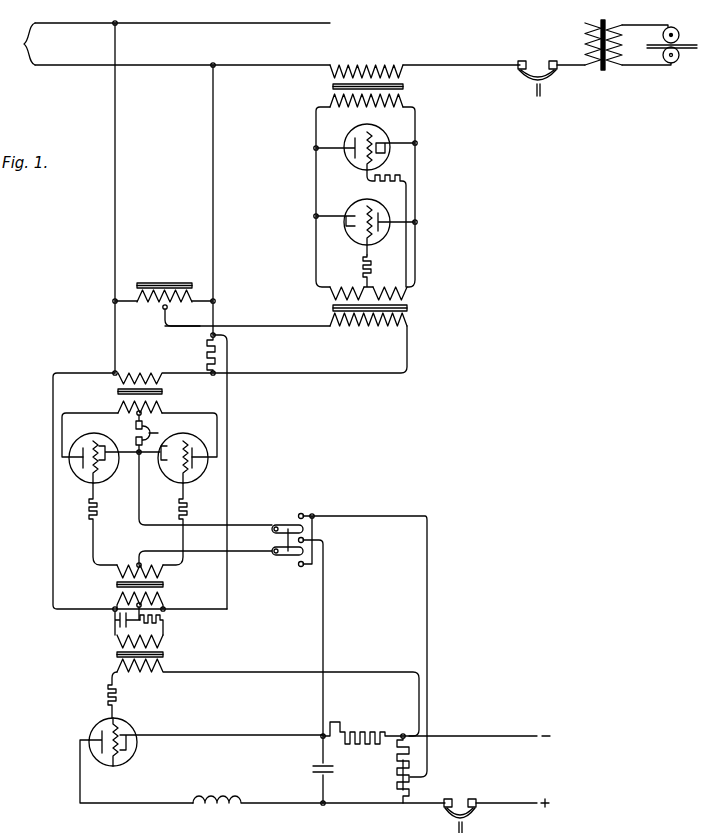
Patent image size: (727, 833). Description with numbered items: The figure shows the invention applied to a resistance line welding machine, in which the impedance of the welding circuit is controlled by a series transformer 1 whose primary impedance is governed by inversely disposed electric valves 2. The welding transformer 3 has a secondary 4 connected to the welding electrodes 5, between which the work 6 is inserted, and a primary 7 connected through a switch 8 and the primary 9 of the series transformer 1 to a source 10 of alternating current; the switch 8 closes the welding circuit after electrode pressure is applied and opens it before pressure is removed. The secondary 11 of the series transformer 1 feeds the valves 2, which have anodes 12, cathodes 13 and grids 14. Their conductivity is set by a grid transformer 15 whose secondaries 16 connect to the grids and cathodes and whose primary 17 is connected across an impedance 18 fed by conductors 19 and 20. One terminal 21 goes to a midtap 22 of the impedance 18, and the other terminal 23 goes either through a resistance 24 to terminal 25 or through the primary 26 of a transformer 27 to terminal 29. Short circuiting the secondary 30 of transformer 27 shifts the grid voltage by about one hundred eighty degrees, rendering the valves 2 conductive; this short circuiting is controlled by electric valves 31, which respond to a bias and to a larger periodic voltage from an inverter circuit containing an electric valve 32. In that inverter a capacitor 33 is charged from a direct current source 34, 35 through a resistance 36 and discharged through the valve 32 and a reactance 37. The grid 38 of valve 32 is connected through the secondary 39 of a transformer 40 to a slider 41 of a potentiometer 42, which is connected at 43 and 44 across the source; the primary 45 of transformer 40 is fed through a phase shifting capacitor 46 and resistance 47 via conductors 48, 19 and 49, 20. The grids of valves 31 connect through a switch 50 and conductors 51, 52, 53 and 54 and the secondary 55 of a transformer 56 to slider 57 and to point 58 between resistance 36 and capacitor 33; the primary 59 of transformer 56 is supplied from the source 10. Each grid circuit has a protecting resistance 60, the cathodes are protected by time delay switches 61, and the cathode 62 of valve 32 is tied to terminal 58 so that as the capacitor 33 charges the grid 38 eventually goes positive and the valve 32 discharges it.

The series transformer 1 is at (408, 88).
The electric valves 2 is at (352, 136).
The welding transformer 3 is at (603, 72).
The secondary 4 is at (612, 64).
The welding electrodes 5 is at (663, 35).
The work 6 is at (692, 44).
The primary 7 is at (584, 44).
The switch 8 is at (526, 80).
The primary 9 is at (388, 62).
The source of periodic current 10 is at (264, 44).
The secondary 11 is at (328, 98).
The anodes 12 is at (352, 154).
The cathodes 13 is at (386, 152).
The grids 14 is at (372, 140).
The grid transformer 15 is at (410, 309).
The secondaries 16 is at (328, 297).
The primary 17 is at (370, 328).
The impedance 18 is at (160, 282).
The conductor 19 is at (118, 155).
The conductor 20 is at (210, 198).
The terminal 21 is at (333, 330).
The midtap 22 is at (164, 310).
The terminal 23 is at (411, 328).
The resistance 24 is at (205, 356).
The terminal 25 is at (216, 301).
The primary 26 is at (141, 370).
The transformer 27 is at (164, 392).
The terminal 29 is at (113, 303).
The secondary 30 is at (115, 405).
The electric valves 31 is at (78, 481).
The electric valve 32 is at (90, 728).
The capacitor 33 is at (312, 770).
The direct current source terminal 34 is at (518, 800).
The direct current source terminal 35 is at (512, 734).
The impedance 36 is at (356, 748).
The reactance 37 is at (218, 796).
The grid 38 is at (110, 764).
The secondary 39 is at (116, 666).
The transformer 40 is at (165, 655).
The slider 41 is at (414, 744).
The potentiometer 42 is at (400, 779).
The connection point 43 is at (403, 805).
The connection point 44 is at (403, 734).
The primary 45 is at (115, 645).
The capacitor 46 is at (117, 624).
The resistance 47 is at (162, 622).
The conductor 48 is at (50, 568).
The conductor 49 is at (229, 437).
The switch 50 is at (288, 526).
The conductor 51 is at (250, 525).
The conductor 52 is at (440, 588).
The conductor 53 is at (325, 600).
The conductor 54 is at (254, 552).
The secondary 55 is at (165, 571).
The transformer 56 is at (115, 585).
The slider 57 is at (412, 774).
The terminal 58 is at (350, 727).
The primary 59 is at (165, 600).
The protecting resistance 60 is at (360, 270).
The switches 61 is at (147, 432).
The cathode 62 is at (130, 748).